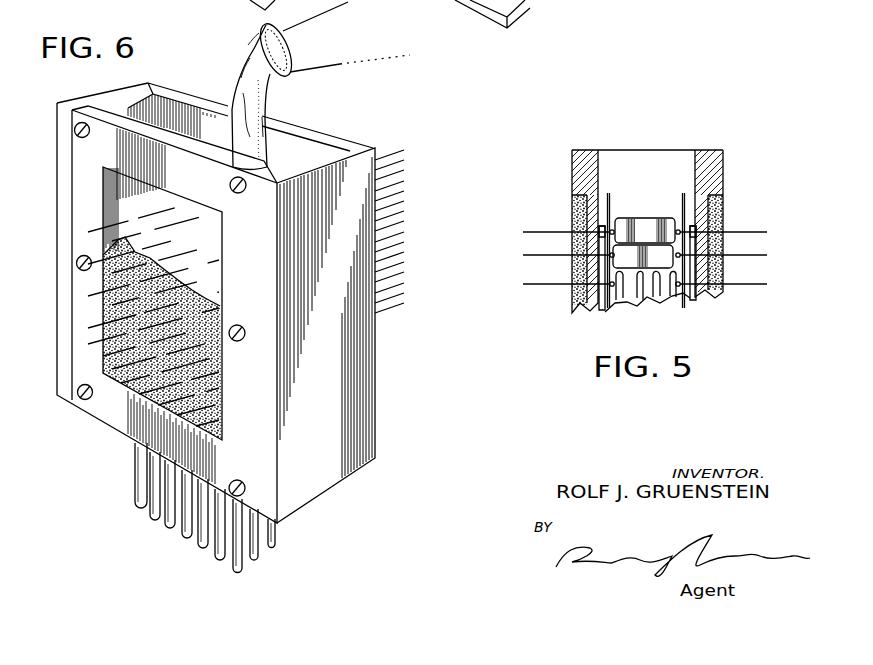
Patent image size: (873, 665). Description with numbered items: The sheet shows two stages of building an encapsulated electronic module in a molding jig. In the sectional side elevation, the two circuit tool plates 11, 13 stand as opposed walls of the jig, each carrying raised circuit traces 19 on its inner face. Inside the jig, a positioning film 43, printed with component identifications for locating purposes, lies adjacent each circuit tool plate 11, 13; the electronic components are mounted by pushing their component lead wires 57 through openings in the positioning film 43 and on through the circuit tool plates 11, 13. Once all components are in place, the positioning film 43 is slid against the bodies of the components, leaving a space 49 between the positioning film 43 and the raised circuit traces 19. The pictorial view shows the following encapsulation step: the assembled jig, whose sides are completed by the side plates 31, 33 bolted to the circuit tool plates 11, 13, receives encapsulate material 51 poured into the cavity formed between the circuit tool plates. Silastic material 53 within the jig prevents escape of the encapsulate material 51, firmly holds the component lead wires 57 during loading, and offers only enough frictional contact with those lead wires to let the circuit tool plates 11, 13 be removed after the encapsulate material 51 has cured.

In FIG. 6, the circuit tool plate 11 is at (88, 147).
In FIG. 5, the circuit tool plate 11 is at (575, 164).
In FIG. 6, the circuit tool plate 13 is at (320, 137).
In FIG. 5, the circuit tool plate 13 is at (712, 158).
In FIG. 5, the raised circuit traces 19 is at (572, 232).
In FIG. 6, the side plate 31 is at (82, 100).
In FIG. 6, the side plate 33 is at (357, 385).
In FIG. 5, the positioning film 43 is at (675, 217).
In FIG. 5, the space 49 is at (600, 260).
In FIG. 6, the encapsulate material 51 is at (238, 94).
In FIG. 6, the silastic material 53 is at (138, 207).
In FIG. 6, the component lead wires 57 is at (405, 247).
In FIG. 5, the component lead wires 57 is at (758, 255).